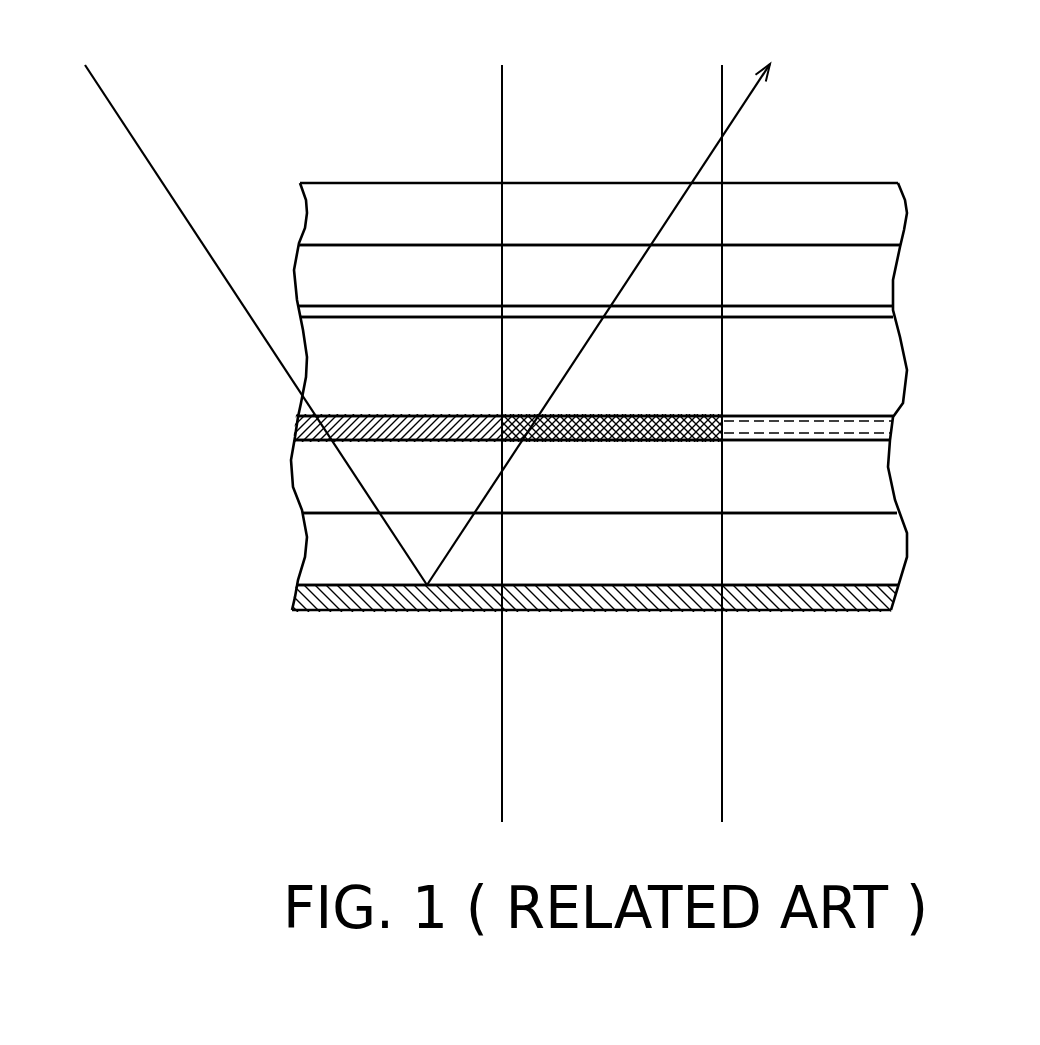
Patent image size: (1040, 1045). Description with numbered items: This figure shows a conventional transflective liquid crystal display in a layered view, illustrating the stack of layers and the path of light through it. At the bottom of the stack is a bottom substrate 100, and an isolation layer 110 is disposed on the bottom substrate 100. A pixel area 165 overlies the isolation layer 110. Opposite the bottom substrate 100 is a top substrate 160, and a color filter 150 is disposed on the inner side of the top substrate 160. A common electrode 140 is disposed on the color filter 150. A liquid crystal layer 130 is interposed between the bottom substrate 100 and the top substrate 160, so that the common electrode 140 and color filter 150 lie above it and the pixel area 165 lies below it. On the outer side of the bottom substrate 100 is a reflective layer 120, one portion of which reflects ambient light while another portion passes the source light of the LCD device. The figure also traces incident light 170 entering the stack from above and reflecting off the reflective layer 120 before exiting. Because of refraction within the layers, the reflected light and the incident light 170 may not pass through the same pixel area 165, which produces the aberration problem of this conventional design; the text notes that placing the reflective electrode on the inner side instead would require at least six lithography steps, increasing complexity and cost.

The bottom substrate 100 is at (870, 553).
The isolation layer 110 is at (870, 484).
The reflective layer 120 is at (870, 605).
The liquid crystal layer 130 is at (870, 371).
The common electrode 140 is at (872, 316).
The color filter 150 is at (870, 279).
The top substrate 160 is at (870, 211).
The pixel area 165 is at (870, 431).
The incident light 170 is at (112, 105).